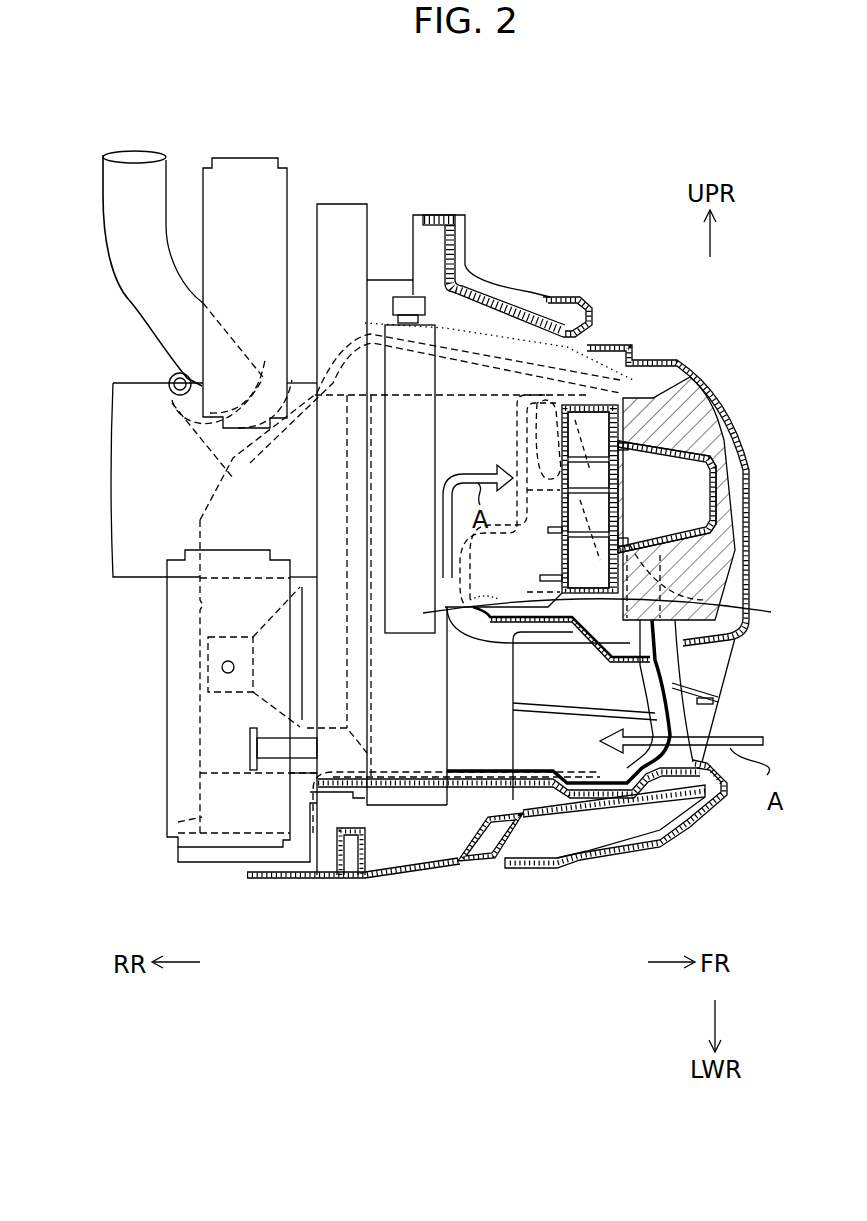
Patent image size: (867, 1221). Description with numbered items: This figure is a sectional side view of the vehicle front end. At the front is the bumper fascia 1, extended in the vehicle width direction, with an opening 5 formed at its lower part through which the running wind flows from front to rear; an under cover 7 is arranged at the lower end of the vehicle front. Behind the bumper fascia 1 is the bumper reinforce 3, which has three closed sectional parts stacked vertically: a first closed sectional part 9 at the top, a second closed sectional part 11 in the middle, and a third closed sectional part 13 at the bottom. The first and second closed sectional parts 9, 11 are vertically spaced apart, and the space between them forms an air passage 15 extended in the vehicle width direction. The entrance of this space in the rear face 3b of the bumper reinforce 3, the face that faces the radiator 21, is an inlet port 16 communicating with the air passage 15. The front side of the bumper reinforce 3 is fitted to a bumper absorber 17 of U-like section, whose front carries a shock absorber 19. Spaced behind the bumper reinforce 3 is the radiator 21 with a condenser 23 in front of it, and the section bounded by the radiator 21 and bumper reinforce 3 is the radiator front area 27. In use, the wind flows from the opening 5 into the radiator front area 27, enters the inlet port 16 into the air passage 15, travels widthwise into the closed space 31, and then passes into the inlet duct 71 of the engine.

The bumper fascia 1 is at (699, 368).
The bumper reinforce 3 is at (651, 435).
The rear face of the bumper reinforce 3b is at (562, 555).
The opening 5 is at (703, 712).
The under cover 7 is at (457, 873).
The first closed sectional part 9 is at (600, 438).
The second closed sectional part 11 is at (593, 522).
The third closed sectional part 13 is at (613, 617).
The air passage 15 is at (592, 470).
The inlet port 16 is at (548, 470).
The bumper absorber 17 is at (705, 490).
The shock absorber 19 is at (703, 437).
The radiator 21 is at (340, 222).
The condenser 23 is at (403, 612).
The radiator front area 27 is at (463, 437).
The closed space 31 is at (507, 340).
The inlet duct 71 is at (120, 180).